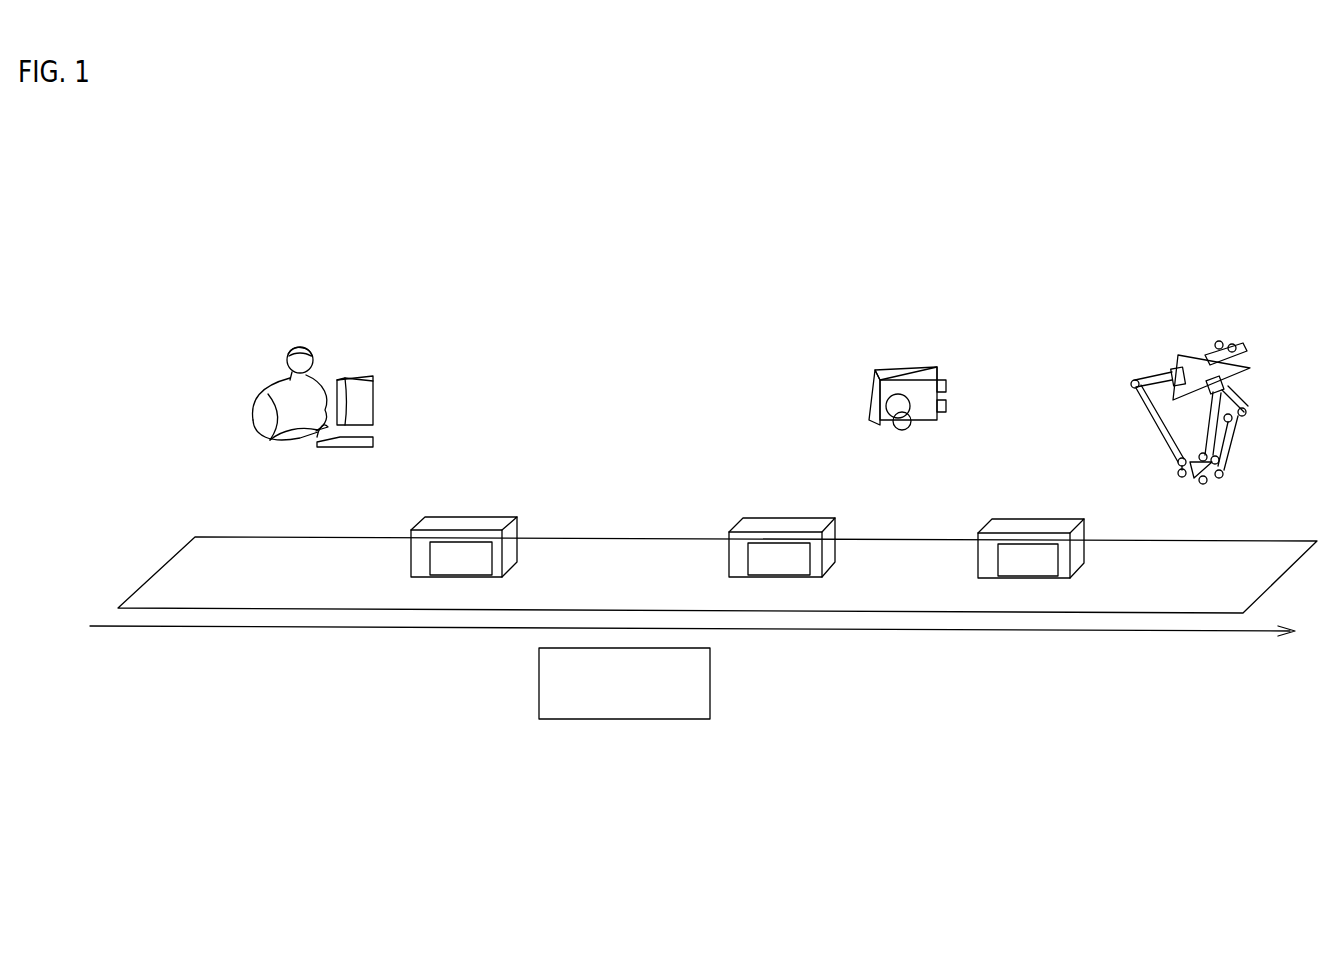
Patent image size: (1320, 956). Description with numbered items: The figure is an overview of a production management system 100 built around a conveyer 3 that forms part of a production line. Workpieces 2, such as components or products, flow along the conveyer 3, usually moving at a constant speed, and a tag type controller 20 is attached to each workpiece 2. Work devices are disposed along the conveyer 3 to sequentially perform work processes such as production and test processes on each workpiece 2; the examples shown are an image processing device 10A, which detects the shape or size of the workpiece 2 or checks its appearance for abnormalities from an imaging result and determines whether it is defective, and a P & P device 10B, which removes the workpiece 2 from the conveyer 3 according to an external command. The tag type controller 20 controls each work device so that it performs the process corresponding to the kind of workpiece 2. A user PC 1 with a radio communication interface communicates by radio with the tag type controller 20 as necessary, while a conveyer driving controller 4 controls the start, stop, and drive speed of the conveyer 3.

The production management system 100 is at (1082, 160).
The user PC 1 is at (360, 376).
The workpiece 2 is at (503, 526).
The tag type controller 20 is at (442, 558).
The conveyer 3 is at (166, 568).
The conveyer driving controller 4 is at (539, 700).
The image processing device 10A is at (904, 368).
The P & P device 10B is at (1187, 354).